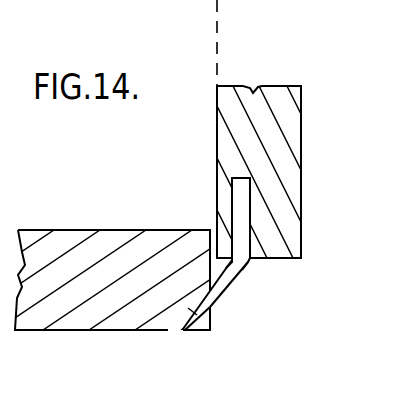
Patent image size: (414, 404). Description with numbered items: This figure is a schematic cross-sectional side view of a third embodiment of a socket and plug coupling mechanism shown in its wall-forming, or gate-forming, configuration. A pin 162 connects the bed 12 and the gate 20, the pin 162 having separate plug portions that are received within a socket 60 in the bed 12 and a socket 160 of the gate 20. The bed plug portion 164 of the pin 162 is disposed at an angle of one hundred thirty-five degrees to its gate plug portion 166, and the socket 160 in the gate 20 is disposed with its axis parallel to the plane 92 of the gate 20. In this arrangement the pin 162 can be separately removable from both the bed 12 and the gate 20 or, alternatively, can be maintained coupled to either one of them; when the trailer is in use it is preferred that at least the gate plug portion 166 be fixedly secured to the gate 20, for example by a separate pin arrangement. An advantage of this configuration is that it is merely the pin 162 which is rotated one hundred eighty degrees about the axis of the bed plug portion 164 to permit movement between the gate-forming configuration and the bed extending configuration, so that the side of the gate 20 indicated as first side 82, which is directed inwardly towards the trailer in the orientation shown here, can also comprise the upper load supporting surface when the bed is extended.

The bed 12 is at (78, 237).
The gate 20 is at (283, 103).
The socket 60 is at (175, 332).
The first side 82 is at (217, 118).
The plane 92 is at (219, 20).
The socket 160 is at (252, 187).
The pin 162 is at (249, 265).
The bed plug portion 164 is at (212, 287).
The gate plug portion 166 is at (253, 229).